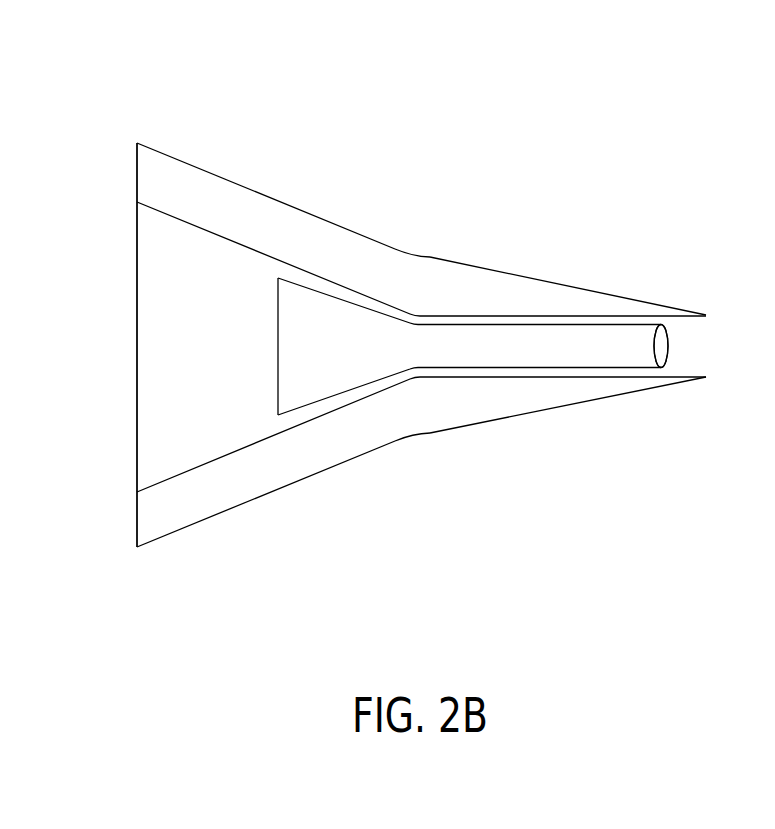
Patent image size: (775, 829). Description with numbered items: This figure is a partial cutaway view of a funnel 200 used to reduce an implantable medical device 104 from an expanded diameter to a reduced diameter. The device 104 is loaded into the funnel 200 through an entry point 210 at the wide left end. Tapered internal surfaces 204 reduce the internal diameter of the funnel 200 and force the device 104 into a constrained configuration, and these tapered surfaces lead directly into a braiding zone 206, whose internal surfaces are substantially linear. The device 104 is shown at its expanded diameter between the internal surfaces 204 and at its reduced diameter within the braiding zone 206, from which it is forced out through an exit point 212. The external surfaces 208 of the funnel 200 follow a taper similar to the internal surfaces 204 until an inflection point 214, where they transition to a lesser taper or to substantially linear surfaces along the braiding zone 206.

The funnel 200 is at (151, 114).
The implantable medical device 104 is at (615, 325).
The internal surfaces 204 is at (220, 237).
The braiding zone 206 is at (467, 246).
The external surfaces 208 is at (283, 202).
The entry point 210 is at (102, 349).
The exit point 212 is at (708, 338).
The inflection point 214 is at (403, 224).